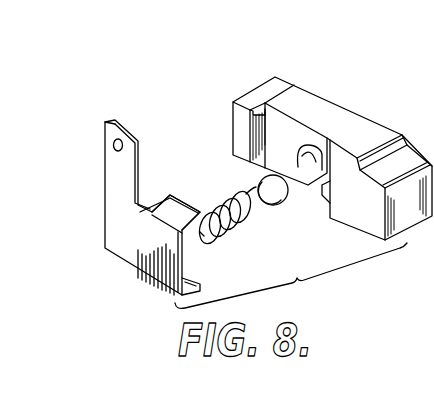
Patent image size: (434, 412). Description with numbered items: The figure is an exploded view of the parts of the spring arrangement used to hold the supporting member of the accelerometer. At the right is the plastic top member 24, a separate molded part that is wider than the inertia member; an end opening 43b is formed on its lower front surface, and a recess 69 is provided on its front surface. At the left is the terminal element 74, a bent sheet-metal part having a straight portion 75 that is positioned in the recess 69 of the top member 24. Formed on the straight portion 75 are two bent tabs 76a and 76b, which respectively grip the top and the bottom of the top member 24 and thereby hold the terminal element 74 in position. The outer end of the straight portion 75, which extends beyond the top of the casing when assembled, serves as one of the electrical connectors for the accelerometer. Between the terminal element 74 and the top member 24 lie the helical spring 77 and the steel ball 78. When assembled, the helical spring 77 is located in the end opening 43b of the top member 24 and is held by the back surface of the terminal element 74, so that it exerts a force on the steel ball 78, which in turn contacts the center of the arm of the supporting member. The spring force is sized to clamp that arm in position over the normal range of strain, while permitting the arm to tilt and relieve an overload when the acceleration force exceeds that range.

The top member 24 is at (406, 148).
The end opening 43b is at (307, 148).
The recess 69 is at (260, 108).
The terminal element 74 is at (105, 238).
The straight portion 75 is at (118, 167).
The bent tab 76a is at (177, 203).
The bent tab 76b is at (200, 283).
The helical spring 77 is at (230, 228).
The steel ball 78 is at (285, 200).